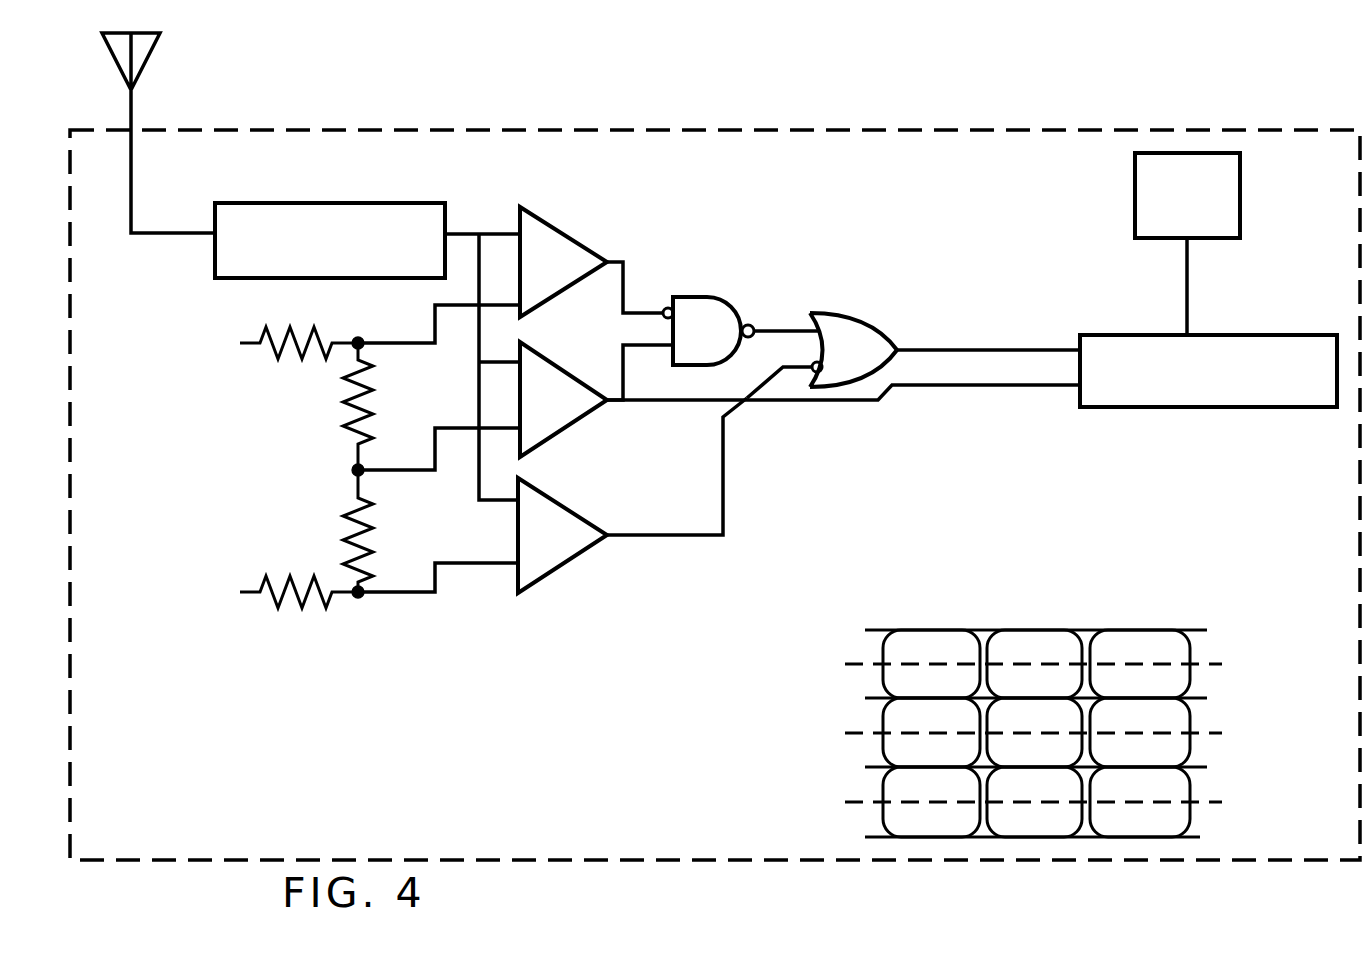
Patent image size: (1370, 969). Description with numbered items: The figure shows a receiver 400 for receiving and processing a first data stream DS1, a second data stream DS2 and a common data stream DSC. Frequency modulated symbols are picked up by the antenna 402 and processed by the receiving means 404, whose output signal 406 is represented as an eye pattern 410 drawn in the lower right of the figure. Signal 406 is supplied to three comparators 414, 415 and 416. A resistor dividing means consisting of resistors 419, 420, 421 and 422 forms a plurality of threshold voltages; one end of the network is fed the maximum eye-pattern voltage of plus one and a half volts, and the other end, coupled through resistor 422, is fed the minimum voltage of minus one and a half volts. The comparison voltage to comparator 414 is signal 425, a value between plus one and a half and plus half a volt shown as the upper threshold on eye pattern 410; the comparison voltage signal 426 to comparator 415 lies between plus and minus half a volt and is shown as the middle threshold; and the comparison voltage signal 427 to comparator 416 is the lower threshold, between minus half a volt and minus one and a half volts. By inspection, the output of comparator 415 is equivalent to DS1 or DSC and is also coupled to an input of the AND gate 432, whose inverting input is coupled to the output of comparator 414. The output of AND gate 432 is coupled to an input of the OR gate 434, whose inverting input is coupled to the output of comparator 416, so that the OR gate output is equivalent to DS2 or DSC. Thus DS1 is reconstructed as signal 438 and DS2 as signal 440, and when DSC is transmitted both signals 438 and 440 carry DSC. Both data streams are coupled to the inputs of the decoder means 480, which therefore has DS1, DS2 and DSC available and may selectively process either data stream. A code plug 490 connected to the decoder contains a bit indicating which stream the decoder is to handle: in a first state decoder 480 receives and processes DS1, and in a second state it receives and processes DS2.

The receiver 400 is at (563, 113).
The antenna 402 is at (150, 50).
The receiving means 404 is at (272, 203).
The output signal 406 is at (452, 232).
The eye pattern 410 is at (1027, 630).
The comparator 414 is at (543, 218).
The comparator 415 is at (575, 422).
The comparator 416 is at (573, 558).
The resistor 419 is at (305, 322).
The resistor 420 is at (345, 405).
The resistor 421 is at (345, 520).
The resistor 422 is at (275, 603).
The comparison voltage signal 425 is at (385, 347).
The comparison voltage signal 426 is at (435, 442).
The comparison voltage signal 427 is at (408, 595).
The AND gate 432 is at (710, 297).
The OR gate 434 is at (833, 316).
The signal 438 is at (833, 402).
The signal 440 is at (1063, 337).
The decoder means 480 is at (1212, 336).
The code plug 490 is at (1135, 218).